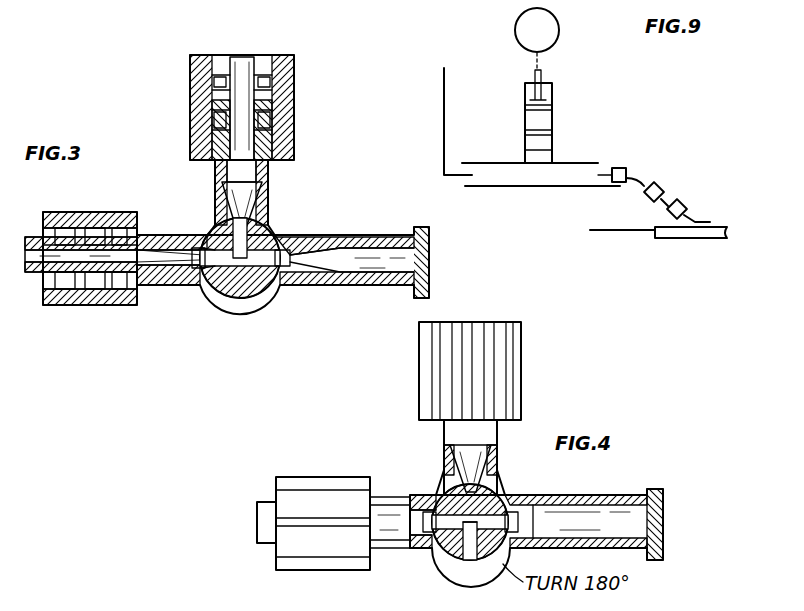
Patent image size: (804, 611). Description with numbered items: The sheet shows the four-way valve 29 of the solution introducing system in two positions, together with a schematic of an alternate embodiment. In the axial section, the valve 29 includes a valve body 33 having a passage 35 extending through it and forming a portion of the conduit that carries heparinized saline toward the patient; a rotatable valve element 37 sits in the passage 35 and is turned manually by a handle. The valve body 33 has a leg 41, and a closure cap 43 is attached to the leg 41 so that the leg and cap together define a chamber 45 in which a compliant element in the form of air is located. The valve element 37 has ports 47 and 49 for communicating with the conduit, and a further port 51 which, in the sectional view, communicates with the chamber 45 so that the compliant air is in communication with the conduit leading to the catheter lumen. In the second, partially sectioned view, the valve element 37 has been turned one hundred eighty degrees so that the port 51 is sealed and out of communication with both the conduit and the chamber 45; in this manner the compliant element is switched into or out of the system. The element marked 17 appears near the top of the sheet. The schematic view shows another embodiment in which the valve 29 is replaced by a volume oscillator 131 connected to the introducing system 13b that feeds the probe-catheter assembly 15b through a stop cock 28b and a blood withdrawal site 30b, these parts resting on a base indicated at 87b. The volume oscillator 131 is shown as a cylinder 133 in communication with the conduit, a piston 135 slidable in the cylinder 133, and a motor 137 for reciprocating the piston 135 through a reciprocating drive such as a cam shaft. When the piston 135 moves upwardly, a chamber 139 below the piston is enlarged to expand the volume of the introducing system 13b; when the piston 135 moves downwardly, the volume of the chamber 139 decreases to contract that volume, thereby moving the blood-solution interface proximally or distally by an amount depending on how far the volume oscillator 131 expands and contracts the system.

In FIG. 3, the reference numeral 17 is at (22, 0).
In FIG. 3, the four-way valve 29 is at (147, 200).
In FIG. 3, the valve body 33 is at (294, 234).
In FIG. 4, the valve body 33 is at (536, 538).
In FIG. 3, the passage 35 is at (152, 280).
In FIG. 4, the passage 35 is at (333, 523).
In FIG. 3, the rotatable valve element 37 is at (245, 290).
In FIG. 4, the rotatable valve element 37 is at (445, 548).
In FIG. 3, the leg 41 is at (218, 194).
In FIG. 3, the closure cap 43 is at (190, 62).
In FIG. 4, the closure cap 43 is at (506, 348).
In FIG. 3, the chamber 45 is at (268, 168).
In FIG. 4, the chamber 45 is at (448, 446).
In FIG. 3, the port 47 is at (210, 268).
In FIG. 4, the port 47 is at (524, 500).
In FIG. 3, the port 49 is at (285, 280).
In FIG. 4, the port 49 is at (420, 508).
In FIG. 3, the port 51 is at (216, 232).
In FIG. 4, the port 51 is at (466, 560).
In FIG. 9, the introducing system 13b is at (440, 134).
In FIG. 9, the probe-catheter assembly 15b is at (715, 219).
In FIG. 9, the stop cock 28b is at (624, 168).
In FIG. 9, the blood withdrawal site 30b is at (664, 186).
In FIG. 9, the base 87b is at (620, 233).
In FIG. 9, the volume oscillator 131 is at (504, 115).
In FIG. 9, the cylinder 133 is at (560, 150).
In FIG. 9, the piston 135 is at (548, 118).
In FIG. 9, the motor 137 is at (558, 35).
In FIG. 9, the chamber 139 is at (526, 146).